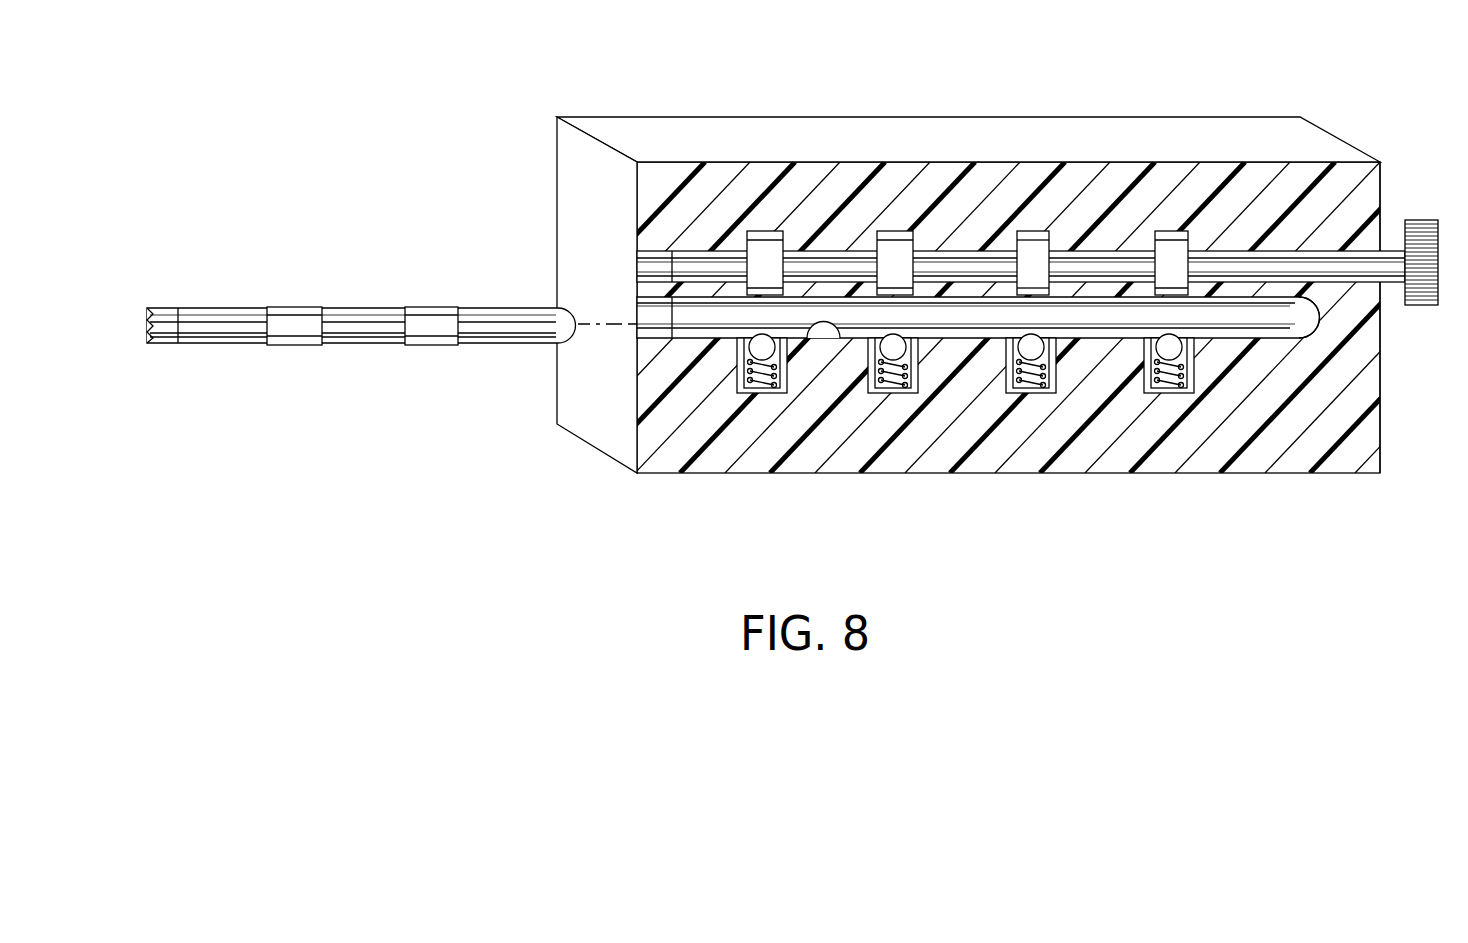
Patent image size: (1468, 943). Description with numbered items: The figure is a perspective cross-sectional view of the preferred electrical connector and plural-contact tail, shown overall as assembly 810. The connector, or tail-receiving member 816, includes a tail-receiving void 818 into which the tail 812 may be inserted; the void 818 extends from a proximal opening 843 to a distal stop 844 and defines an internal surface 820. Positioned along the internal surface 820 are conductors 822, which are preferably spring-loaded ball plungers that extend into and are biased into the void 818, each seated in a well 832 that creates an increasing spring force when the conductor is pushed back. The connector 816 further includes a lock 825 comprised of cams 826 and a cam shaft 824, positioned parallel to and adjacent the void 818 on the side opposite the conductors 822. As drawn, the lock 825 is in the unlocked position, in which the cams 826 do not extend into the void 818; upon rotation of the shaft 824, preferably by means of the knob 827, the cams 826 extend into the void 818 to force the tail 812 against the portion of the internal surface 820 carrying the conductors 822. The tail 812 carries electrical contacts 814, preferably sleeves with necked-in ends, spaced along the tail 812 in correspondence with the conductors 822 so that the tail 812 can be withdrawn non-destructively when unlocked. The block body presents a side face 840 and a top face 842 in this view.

The positioning assembly 810 is at (605, 490).
The tail 812 is at (373, 308).
The electrical contacts 814 is at (414, 346).
The tail-receiving member 816 is at (799, 135).
The tail-receiving void 818 is at (670, 327).
The internal surface 820 is at (809, 343).
The conductors 822 is at (900, 352).
The cam shaft 824 is at (1298, 260).
The lock 825 is at (1380, 165).
The cams 826 is at (892, 231).
The knob 827 is at (1425, 305).
The wells 832 is at (1168, 393).
The side face 840 is at (573, 185).
The top face 842 is at (1327, 115).
The proximal opening 843 is at (637, 308).
The distal stop 844 is at (1322, 322).